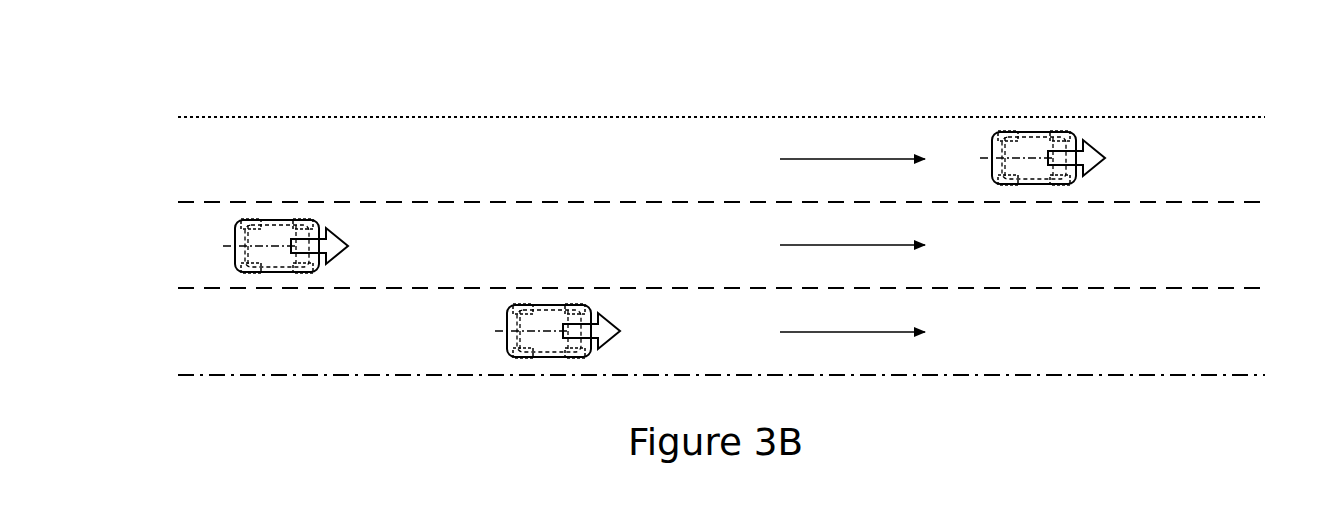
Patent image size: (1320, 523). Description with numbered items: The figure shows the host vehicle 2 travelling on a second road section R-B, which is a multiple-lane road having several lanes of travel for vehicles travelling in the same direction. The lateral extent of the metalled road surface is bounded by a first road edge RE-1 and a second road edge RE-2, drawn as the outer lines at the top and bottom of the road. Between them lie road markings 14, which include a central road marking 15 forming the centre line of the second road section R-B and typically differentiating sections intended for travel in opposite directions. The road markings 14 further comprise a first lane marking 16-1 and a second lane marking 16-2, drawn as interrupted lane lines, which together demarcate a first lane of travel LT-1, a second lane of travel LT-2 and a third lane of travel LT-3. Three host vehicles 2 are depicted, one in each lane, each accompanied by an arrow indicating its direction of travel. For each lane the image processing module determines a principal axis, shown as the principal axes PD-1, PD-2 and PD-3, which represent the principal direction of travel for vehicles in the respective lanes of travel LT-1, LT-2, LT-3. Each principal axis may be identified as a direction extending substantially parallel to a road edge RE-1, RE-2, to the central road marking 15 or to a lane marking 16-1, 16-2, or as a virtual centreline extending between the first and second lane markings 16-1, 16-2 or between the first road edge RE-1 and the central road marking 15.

The host vehicle 2 is at (235, 250).
The road markings 14 is at (743, 247).
The central road marking 15 is at (1257, 374).
The first lane marking 16-1 is at (1205, 204).
The second lane marking 16-2 is at (1257, 288).
The second road section R-B is at (1057, 98).
The first road edge RE-1 is at (1256, 115).
The second road edge RE-2 is at (1222, 377).
The first lane of travel LT-1 is at (722, 170).
The second lane of travel LT-2 is at (722, 255).
The third lane of travel LT-3 is at (722, 343).
The principal axis of the first lane of travel PD-1 is at (852, 147).
The principal axis of the second lane of travel PD-2 is at (852, 232).
The principal axis of the third lane of travel PD-3 is at (852, 319).